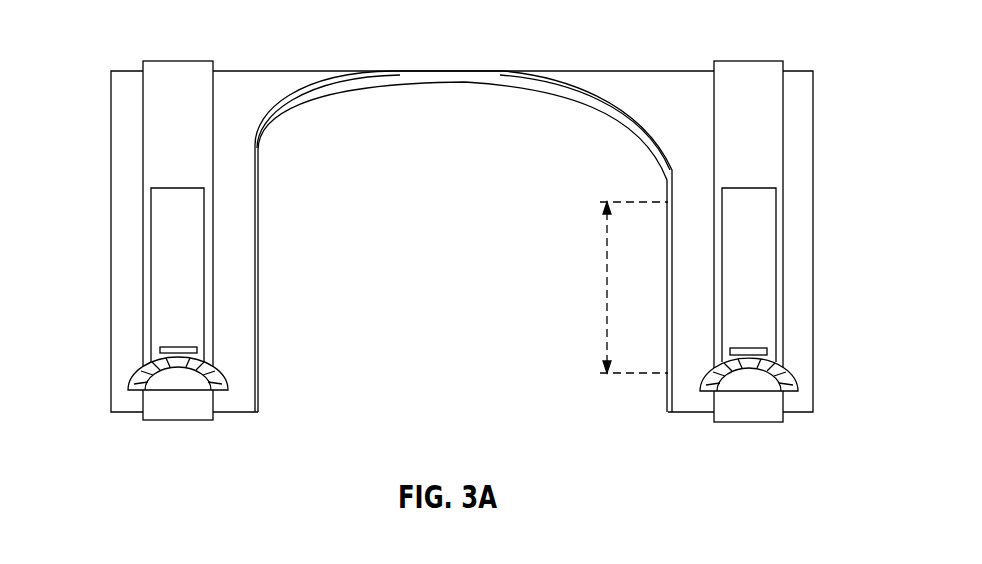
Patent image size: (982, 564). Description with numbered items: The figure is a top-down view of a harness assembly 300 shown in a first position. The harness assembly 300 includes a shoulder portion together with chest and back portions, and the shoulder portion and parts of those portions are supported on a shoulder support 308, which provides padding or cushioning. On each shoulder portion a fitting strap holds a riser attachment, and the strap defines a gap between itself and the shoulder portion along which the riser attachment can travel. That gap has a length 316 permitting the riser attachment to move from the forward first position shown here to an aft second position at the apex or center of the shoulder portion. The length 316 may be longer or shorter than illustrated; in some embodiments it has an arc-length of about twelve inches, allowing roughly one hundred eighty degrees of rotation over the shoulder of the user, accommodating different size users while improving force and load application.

The harness assembly 300 is at (125, 33).
The shoulder support 308 is at (227, 172).
The length 316 is at (607, 293).